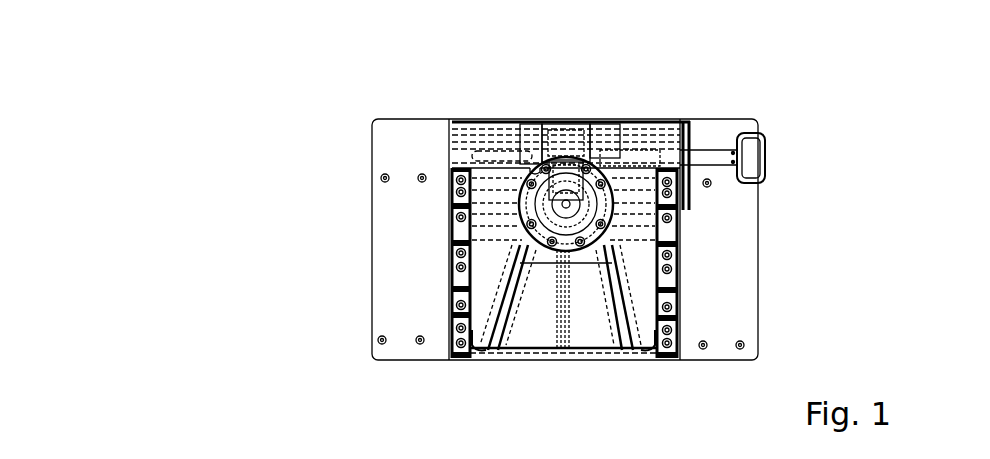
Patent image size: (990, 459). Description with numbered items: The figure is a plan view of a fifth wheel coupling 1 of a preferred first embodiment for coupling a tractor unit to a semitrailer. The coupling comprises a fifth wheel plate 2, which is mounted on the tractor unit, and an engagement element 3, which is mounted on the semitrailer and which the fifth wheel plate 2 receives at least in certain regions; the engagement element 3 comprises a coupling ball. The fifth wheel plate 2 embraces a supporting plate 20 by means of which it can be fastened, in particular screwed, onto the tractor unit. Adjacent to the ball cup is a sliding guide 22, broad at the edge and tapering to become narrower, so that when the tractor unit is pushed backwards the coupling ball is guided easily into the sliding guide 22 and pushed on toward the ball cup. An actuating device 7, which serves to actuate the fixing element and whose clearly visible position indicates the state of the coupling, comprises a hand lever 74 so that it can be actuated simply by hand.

The fifth wheel coupling 1 is at (205, 108).
The fifth wheel plate 2 is at (520, 250).
The engagement element 3 is at (578, 216).
The actuating device 7 is at (711, 160).
The hand lever 74 is at (772, 127).
The supporting plate 20 is at (706, 278).
The sliding guide 22 is at (540, 295).